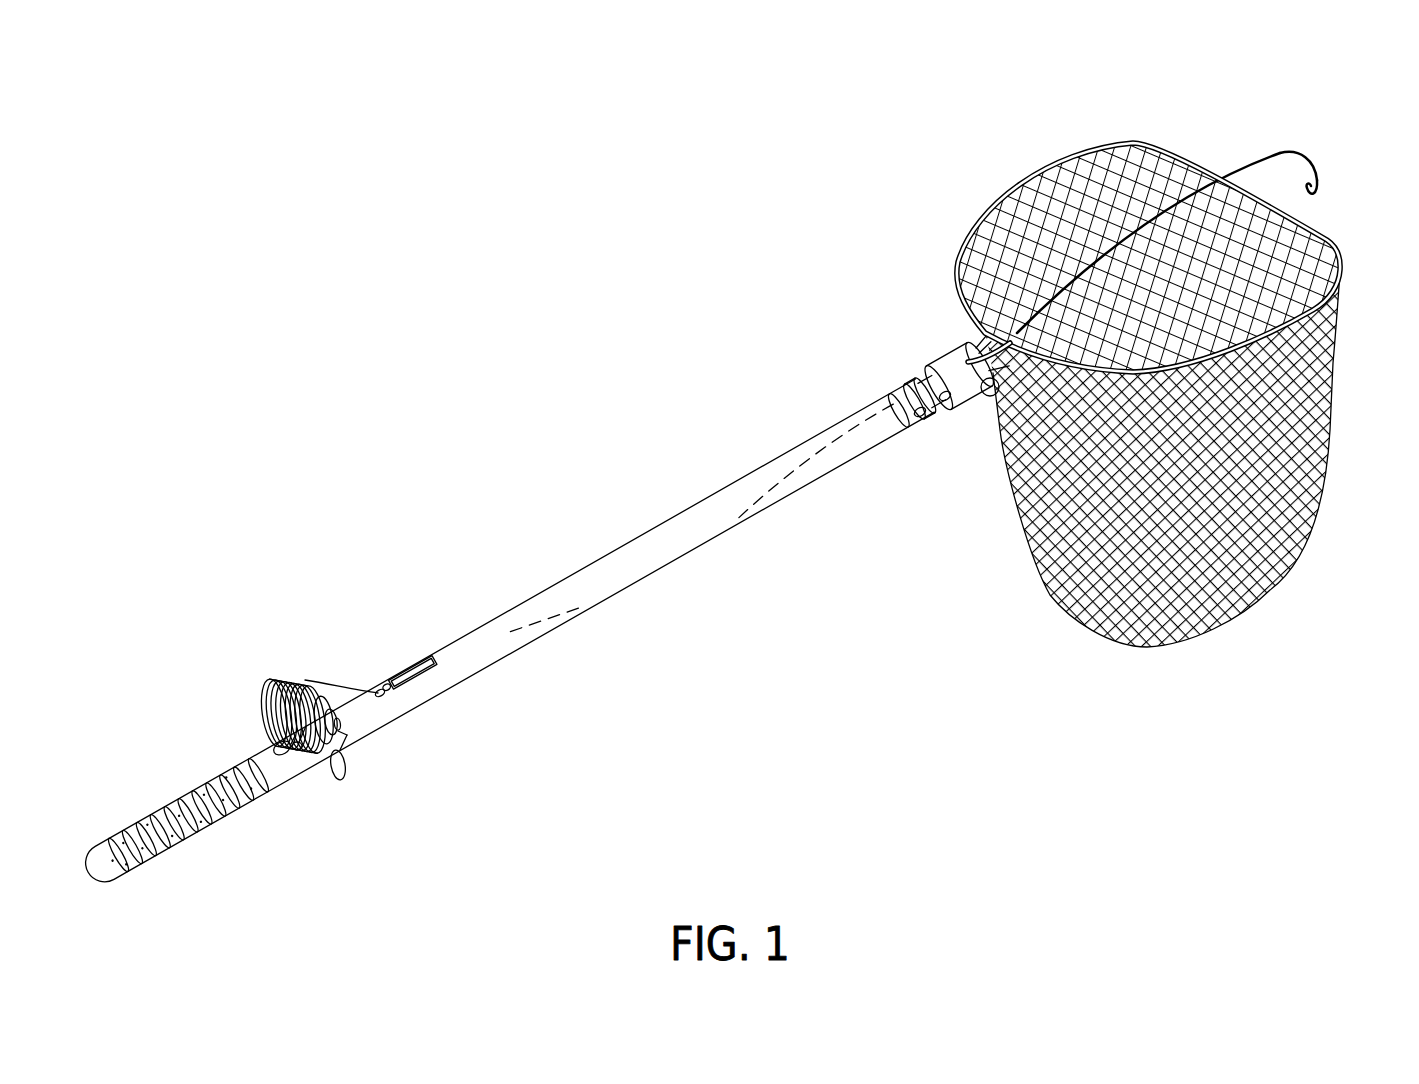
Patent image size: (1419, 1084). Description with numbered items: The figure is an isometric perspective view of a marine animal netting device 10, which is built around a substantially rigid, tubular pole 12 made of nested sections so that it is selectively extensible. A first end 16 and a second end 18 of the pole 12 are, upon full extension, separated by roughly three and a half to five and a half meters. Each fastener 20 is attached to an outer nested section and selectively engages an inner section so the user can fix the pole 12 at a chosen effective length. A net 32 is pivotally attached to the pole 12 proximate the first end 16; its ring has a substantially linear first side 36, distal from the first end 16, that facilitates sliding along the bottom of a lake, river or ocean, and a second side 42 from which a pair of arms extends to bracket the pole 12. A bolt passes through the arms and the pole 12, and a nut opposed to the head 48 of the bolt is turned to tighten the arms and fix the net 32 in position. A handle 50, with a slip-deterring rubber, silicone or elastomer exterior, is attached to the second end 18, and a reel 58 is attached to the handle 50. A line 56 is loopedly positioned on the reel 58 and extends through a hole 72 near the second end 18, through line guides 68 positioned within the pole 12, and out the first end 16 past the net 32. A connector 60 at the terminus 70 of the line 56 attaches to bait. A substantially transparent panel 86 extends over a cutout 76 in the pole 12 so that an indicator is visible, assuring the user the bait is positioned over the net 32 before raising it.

The marine animal netting device 10 is at (506, 316).
The pole 12 is at (585, 565).
The first end 16 is at (972, 345).
The second end 18 is at (275, 787).
The fastener 20 is at (947, 402).
The net 32 is at (1313, 387).
The first side 36 is at (1298, 220).
The second side 42 is at (1017, 337).
The head 48 is at (990, 398).
The handle 50 is at (193, 835).
The line 56 is at (357, 693).
The reel 58 is at (265, 700).
The connector 60 is at (1320, 195).
The line guides 68 is at (740, 517).
The terminus 70 is at (1318, 173).
The hole 72 is at (393, 701).
The cutout 76 is at (440, 686).
The panel 86 is at (404, 665).